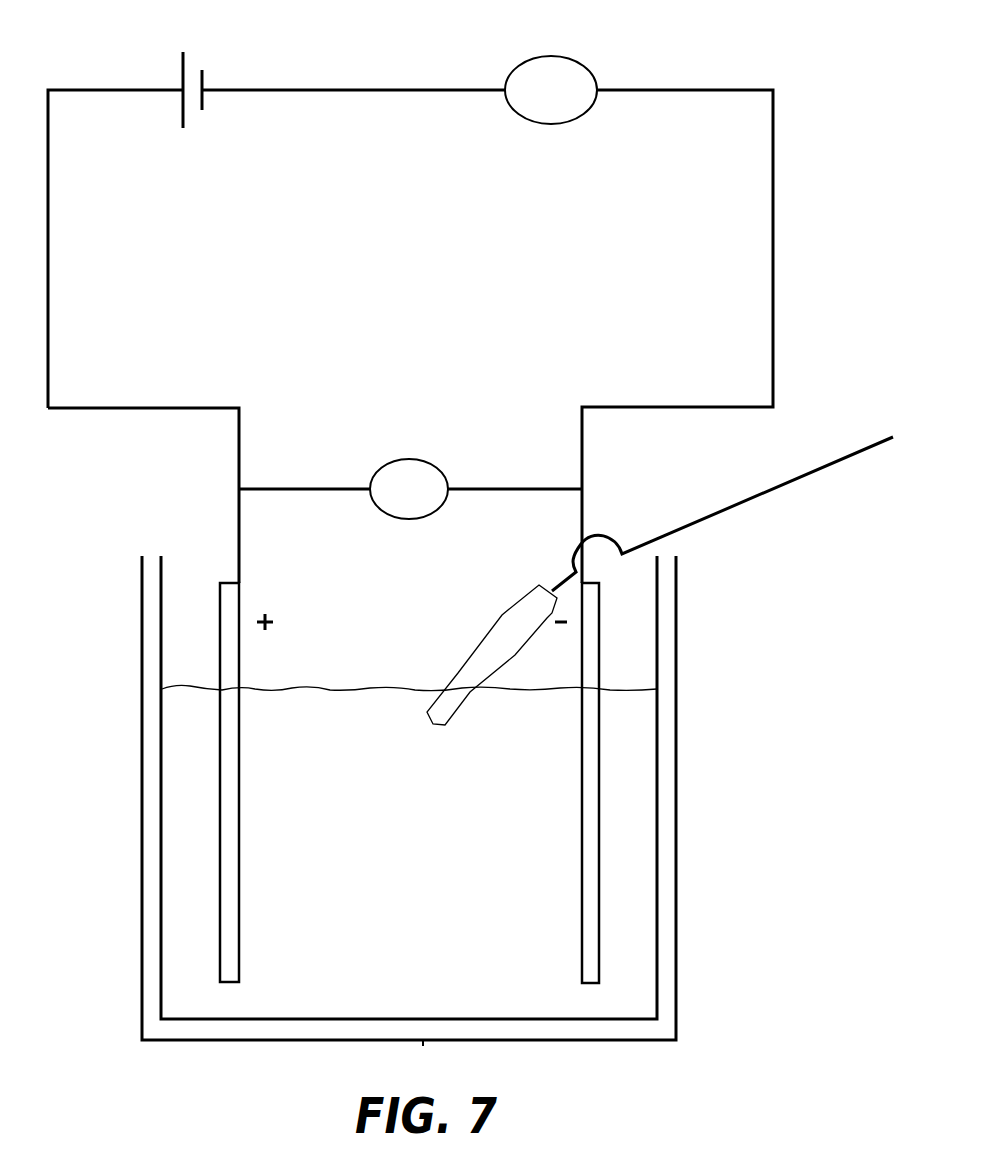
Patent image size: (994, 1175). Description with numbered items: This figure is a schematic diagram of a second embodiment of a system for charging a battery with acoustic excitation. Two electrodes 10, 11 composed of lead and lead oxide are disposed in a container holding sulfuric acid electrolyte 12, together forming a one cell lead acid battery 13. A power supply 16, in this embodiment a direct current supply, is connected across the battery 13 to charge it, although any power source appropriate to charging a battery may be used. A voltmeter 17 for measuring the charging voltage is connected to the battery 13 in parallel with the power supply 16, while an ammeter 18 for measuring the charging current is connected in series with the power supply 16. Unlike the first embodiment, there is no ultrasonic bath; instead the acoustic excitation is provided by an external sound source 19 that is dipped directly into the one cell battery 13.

The electrode 10 is at (240, 598).
The electrode 11 is at (581, 596).
The sulfuric acid electrolyte 12 is at (362, 687).
The one cell lead acid battery 13 is at (696, 954).
The power supply 16 is at (193, 86).
The voltmeter 17 is at (409, 459).
The ammeter 18 is at (551, 56).
The external sound source 19 is at (459, 657).